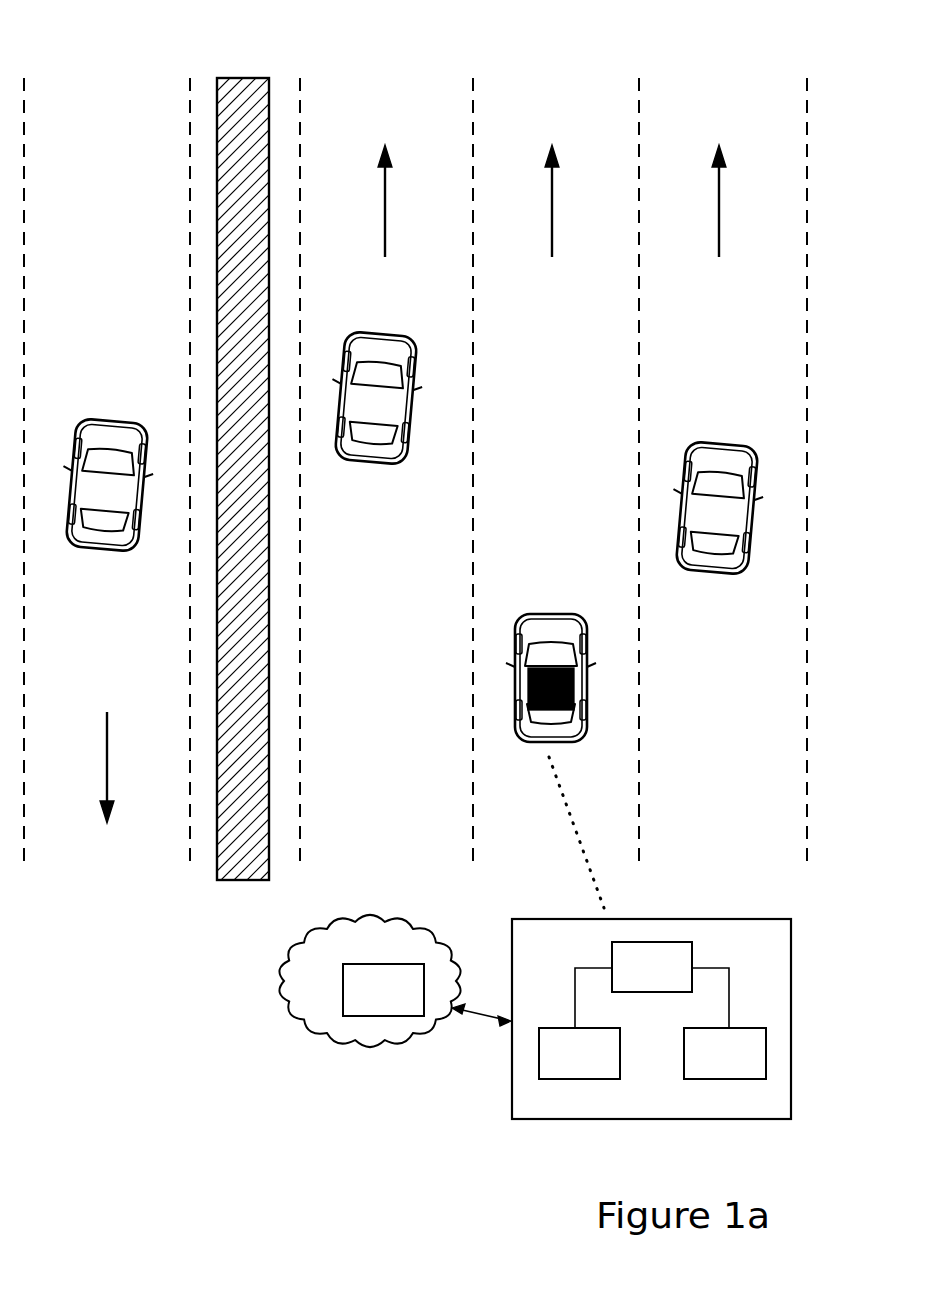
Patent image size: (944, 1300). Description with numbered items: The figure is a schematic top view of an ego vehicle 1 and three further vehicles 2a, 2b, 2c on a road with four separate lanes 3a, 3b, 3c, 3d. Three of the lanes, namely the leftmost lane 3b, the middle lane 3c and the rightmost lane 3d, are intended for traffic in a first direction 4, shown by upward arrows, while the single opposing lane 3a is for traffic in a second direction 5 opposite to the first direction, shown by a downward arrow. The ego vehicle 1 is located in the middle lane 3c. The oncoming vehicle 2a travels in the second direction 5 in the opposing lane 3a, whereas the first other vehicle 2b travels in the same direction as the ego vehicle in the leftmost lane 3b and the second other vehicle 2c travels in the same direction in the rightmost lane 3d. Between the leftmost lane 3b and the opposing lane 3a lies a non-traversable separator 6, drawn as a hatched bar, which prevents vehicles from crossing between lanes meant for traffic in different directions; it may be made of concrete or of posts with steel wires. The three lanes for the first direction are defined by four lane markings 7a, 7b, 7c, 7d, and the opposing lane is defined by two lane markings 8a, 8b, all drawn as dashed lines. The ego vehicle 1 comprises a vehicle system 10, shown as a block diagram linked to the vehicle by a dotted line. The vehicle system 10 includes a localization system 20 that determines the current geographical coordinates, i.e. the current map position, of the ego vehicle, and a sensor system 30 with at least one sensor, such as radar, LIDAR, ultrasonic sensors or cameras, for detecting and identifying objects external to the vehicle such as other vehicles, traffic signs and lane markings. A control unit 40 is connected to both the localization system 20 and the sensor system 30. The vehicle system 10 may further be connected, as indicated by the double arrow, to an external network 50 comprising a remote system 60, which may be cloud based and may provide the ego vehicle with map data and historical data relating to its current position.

The ego vehicle 1 is at (556, 612).
The oncoming vehicle 2a is at (100, 552).
The first other vehicle 2b is at (380, 332).
The second other vehicle 2c is at (720, 443).
The opposing lane 3a is at (117, 98).
The leftmost lane 3b is at (390, 98).
The middle lane 3c is at (561, 98).
The rightmost lane 3d is at (729, 98).
The first direction 4 is at (385, 215).
The second direction 5 is at (107, 770).
The non-traversable separator 6 is at (243, 78).
The lane marking 7a is at (300, 78).
The lane marking 7b is at (473, 78).
The lane marking 7c is at (639, 78).
The lane marking 7d is at (807, 78).
The lane marking 8a is at (24, 78).
The lane marking 8b is at (190, 78).
The vehicle system 10 is at (651, 1019).
The localization system 20 is at (579, 1053).
The sensor system 30 is at (725, 1053).
The control unit 40 is at (652, 967).
The external network 50 is at (369, 981).
The remote system 60 is at (383, 990).